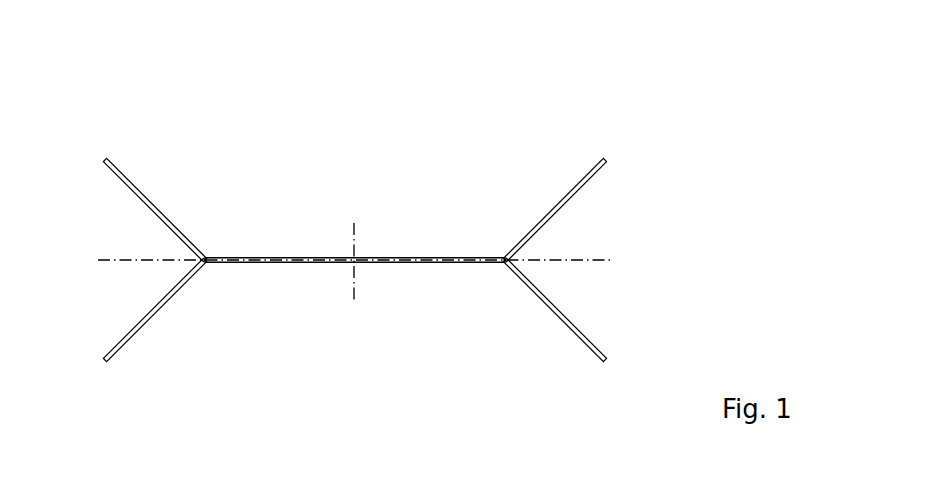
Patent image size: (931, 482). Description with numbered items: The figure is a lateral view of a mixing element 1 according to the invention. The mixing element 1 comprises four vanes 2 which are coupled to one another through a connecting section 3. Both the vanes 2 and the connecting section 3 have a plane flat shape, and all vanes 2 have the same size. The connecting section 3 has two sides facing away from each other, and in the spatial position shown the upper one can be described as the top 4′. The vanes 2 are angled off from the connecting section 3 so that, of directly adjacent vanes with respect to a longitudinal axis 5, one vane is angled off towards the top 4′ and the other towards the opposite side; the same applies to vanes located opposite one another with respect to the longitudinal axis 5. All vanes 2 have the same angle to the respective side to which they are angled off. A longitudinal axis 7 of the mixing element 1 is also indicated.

The mixing element 1 is at (655, 163).
The vanes 2 is at (158, 208).
The connecting section 3 is at (282, 258).
The side of the connecting section 4′ is at (445, 256).
The longitudinal axis 5 is at (354, 230).
The longitudinal axis 7 is at (108, 258).